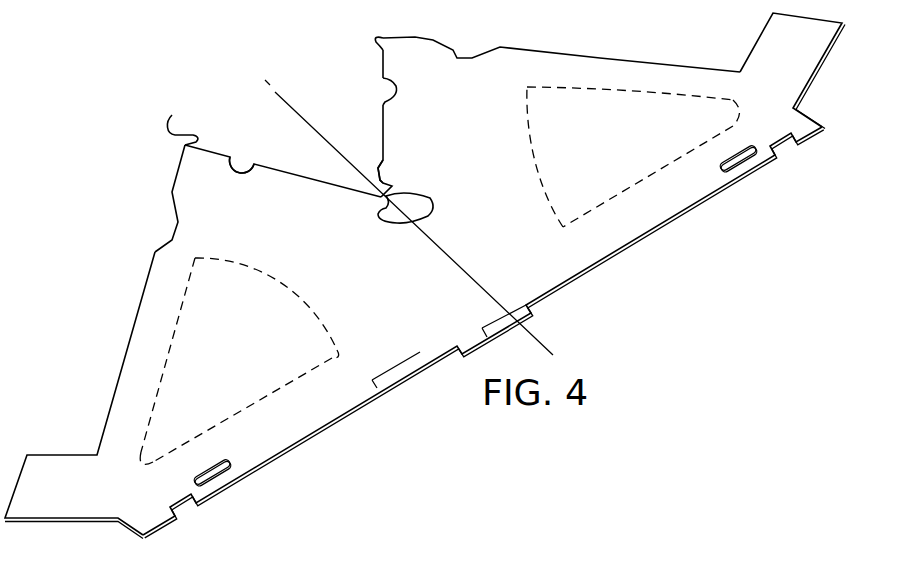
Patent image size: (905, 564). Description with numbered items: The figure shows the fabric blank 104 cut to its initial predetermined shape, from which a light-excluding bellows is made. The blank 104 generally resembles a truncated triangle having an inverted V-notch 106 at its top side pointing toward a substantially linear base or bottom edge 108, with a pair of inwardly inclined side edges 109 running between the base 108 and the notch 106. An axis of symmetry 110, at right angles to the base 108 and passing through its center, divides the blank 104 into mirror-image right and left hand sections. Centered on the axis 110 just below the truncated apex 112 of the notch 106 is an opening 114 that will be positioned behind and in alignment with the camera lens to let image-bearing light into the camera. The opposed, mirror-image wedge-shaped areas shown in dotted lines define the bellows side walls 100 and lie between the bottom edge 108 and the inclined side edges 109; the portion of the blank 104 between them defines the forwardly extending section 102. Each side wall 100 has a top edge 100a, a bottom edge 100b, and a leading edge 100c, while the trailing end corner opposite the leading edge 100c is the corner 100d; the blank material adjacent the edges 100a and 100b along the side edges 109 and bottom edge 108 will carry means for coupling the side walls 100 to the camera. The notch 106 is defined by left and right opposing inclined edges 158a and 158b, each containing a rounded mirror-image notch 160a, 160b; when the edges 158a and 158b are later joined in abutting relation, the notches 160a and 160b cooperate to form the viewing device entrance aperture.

The blank 104 is at (143, 219).
The side edges 109 is at (116, 359).
The base or bottom edge 108 is at (357, 414).
The forwardly extending section 102 is at (500, 228).
The bellows side walls 100 is at (440, 275).
The top edge of side wall 100a is at (187, 287).
The bottom edge of side wall 100b is at (237, 417).
The leading edge of side wall 100c is at (278, 277).
The trailing end corner of side wall 100d is at (146, 460).
The axis of symmetry 110 is at (305, 115).
The inverted V-notch 106 is at (316, 162).
The opening 114 is at (408, 208).
The truncated apex 112 is at (383, 168).
The left hand inclined edge 158a is at (188, 119).
The right hand inclined edge 158b is at (358, 38).
The rounded notch 160a is at (245, 160).
The rounded notch 160b is at (384, 82).